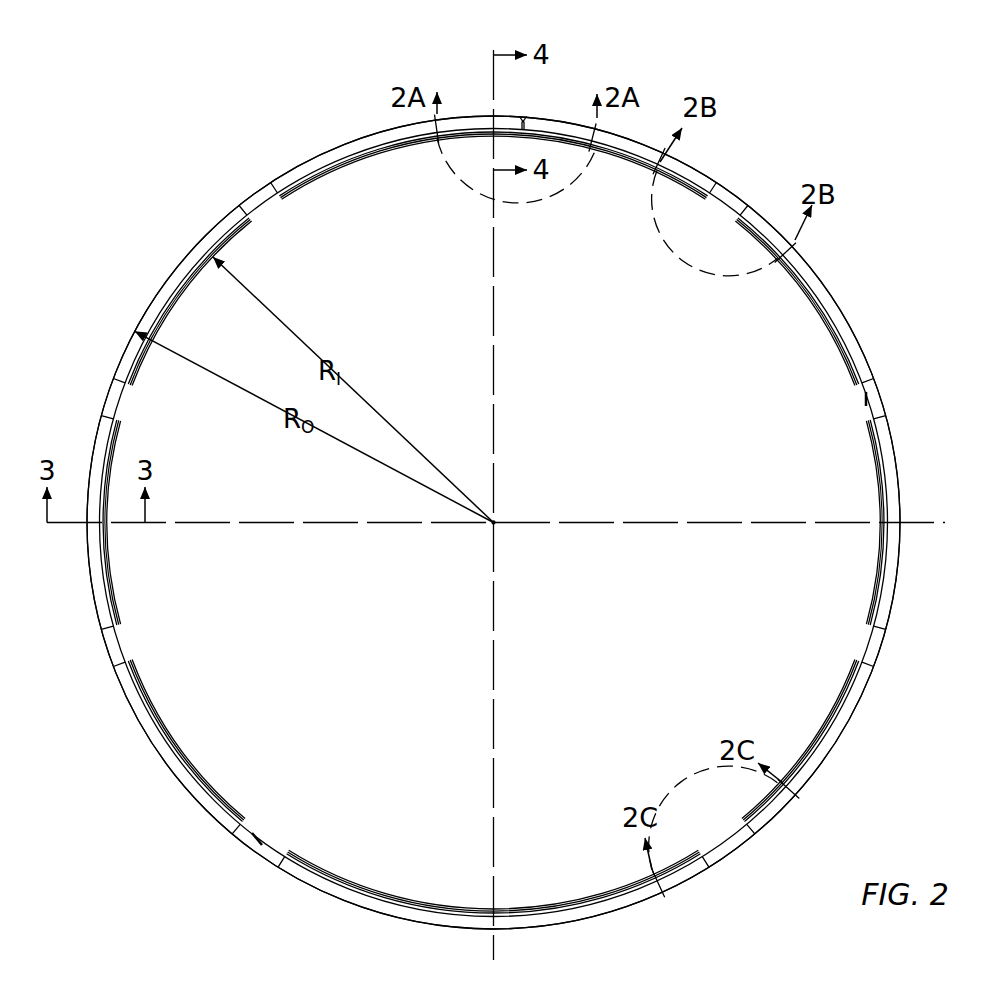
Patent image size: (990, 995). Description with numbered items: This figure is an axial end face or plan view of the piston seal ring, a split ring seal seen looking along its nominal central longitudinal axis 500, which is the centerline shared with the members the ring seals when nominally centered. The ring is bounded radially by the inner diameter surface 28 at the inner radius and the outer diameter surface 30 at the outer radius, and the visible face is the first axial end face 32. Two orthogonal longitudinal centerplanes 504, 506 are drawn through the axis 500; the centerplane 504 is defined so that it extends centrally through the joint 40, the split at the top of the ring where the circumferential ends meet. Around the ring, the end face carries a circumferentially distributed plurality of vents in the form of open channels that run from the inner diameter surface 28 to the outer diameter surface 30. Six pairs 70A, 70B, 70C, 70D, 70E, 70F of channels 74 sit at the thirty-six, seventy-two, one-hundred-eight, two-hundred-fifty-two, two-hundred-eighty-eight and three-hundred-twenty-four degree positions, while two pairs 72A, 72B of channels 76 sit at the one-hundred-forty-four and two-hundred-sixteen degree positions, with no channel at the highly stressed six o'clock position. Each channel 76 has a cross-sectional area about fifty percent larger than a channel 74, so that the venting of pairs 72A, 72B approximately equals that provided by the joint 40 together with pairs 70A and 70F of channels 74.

The inner diameter surface 28 is at (195, 762).
The outer diameter surface 30 is at (172, 778).
The first axial end face 32 is at (836, 296).
The joint 40 is at (526, 106).
The channel pair 70A is at (738, 184).
The channel pair 70B is at (884, 385).
The channel pair 70C is at (893, 655).
The channel pair 70D is at (95, 657).
The channel pair 70E is at (92, 385).
The channel pair 70F is at (247, 184).
The channel pair 72A is at (712, 830).
The channel pair 72B is at (284, 830).
The channel 74 is at (878, 407).
The channel 76 is at (259, 837).
The central longitudinal axis 500 is at (495, 521).
The longitudinal centerplane 504 is at (498, 302).
The longitudinal centerplane 506 is at (668, 523).